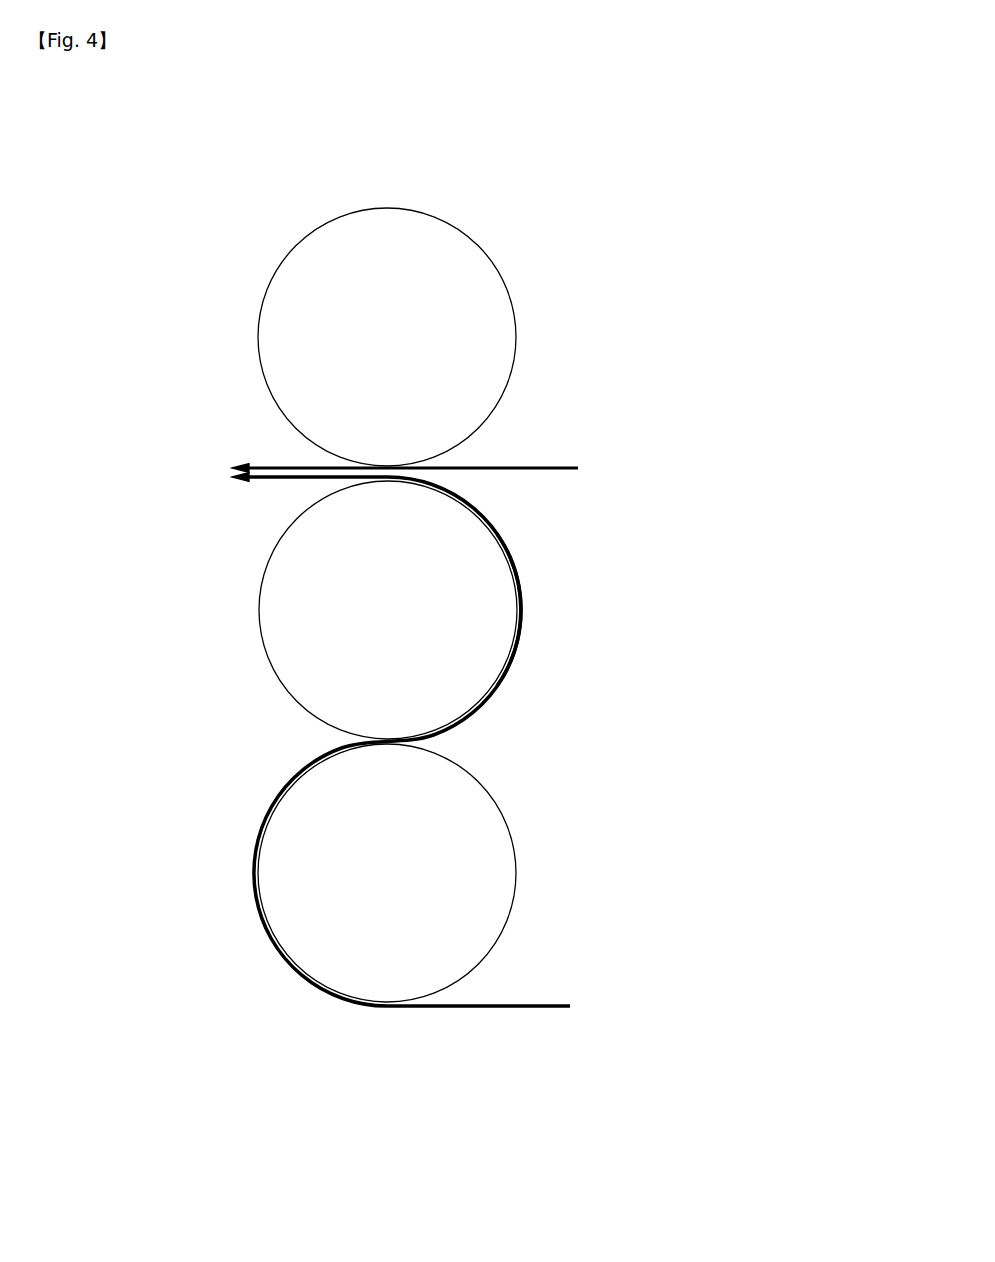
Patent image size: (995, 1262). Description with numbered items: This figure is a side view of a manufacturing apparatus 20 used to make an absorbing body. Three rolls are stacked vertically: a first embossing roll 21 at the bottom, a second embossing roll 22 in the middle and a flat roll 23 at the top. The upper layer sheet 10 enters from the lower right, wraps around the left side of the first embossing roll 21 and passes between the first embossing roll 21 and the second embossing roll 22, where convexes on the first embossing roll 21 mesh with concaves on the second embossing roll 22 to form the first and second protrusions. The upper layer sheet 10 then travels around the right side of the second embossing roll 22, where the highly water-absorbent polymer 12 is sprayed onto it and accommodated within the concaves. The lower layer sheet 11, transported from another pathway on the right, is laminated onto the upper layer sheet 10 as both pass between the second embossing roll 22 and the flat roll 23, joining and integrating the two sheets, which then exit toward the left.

The upper layer sheet 10 is at (533, 1007).
The lower layer sheet 11 is at (570, 466).
The highly water-absorbent polymer 12 is at (518, 539).
The manufacturing apparatus 20 is at (442, 605).
The first embossing roll 21 is at (512, 842).
The second embossing roll 22 is at (260, 610).
The flat roll 23 is at (503, 293).